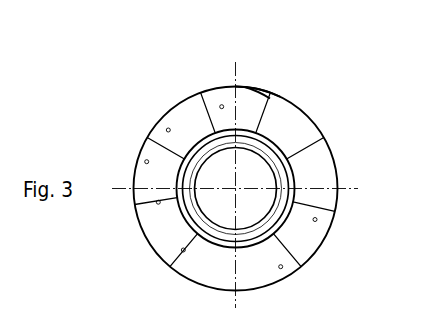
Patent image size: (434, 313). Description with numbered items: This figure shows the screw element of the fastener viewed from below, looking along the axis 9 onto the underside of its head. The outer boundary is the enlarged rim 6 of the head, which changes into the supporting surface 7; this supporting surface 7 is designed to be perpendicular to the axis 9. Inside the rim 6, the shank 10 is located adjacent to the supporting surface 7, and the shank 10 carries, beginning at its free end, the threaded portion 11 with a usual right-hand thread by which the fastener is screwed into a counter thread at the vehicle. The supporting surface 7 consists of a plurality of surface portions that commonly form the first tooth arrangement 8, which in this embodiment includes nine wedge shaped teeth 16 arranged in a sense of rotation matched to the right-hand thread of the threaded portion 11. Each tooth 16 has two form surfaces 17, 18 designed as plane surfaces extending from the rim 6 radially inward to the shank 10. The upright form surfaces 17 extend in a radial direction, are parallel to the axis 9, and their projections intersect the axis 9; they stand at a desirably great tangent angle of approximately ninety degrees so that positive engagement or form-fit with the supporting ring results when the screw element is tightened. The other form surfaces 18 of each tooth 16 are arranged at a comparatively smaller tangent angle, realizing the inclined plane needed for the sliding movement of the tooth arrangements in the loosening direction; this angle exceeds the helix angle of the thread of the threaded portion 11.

The rim 6 is at (298, 107).
The supporting surface 7 is at (258, 87).
The first tooth arrangement 8 is at (262, 78).
The axis 9 is at (236, 188).
The shank 10 is at (258, 163).
The threaded portion 11 is at (282, 200).
The teeth 16 is at (147, 162).
The form surfaces 17 is at (158, 202).
The form surfaces 18 is at (315, 220).